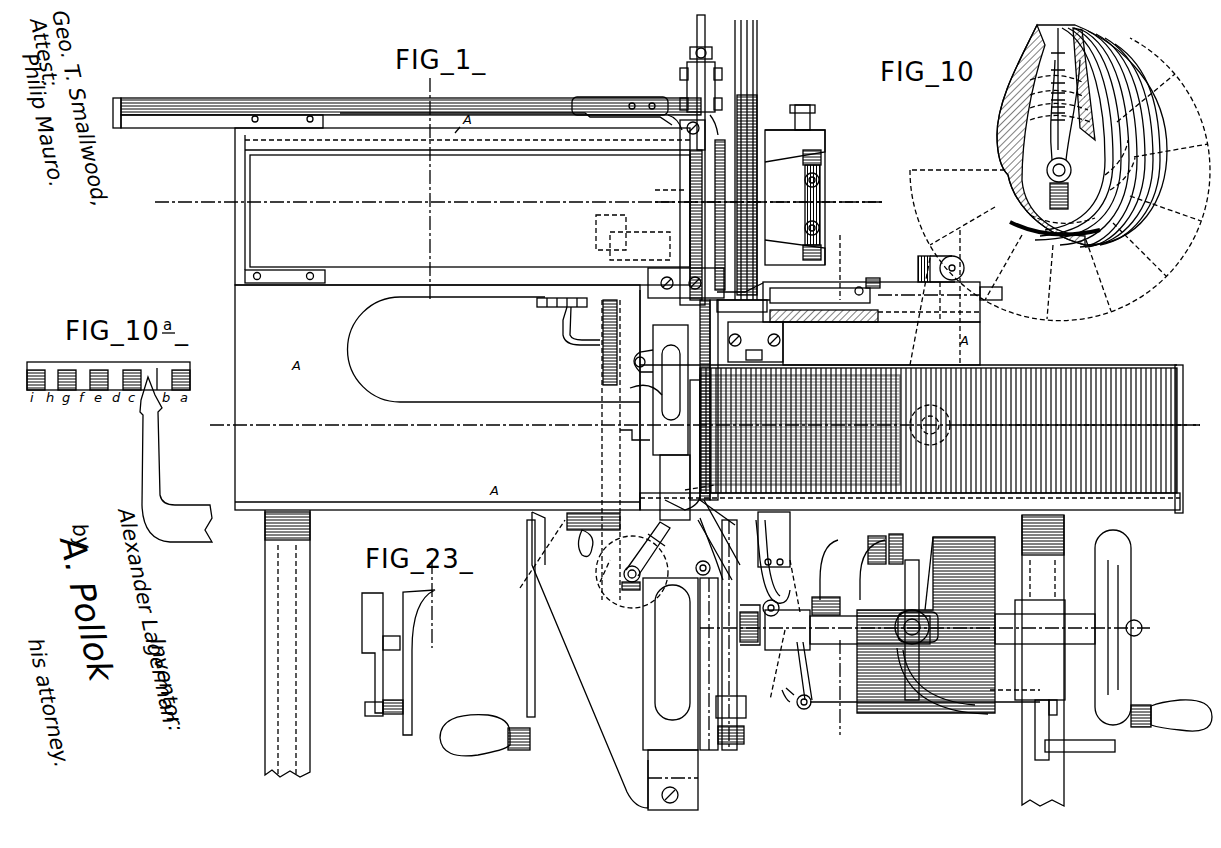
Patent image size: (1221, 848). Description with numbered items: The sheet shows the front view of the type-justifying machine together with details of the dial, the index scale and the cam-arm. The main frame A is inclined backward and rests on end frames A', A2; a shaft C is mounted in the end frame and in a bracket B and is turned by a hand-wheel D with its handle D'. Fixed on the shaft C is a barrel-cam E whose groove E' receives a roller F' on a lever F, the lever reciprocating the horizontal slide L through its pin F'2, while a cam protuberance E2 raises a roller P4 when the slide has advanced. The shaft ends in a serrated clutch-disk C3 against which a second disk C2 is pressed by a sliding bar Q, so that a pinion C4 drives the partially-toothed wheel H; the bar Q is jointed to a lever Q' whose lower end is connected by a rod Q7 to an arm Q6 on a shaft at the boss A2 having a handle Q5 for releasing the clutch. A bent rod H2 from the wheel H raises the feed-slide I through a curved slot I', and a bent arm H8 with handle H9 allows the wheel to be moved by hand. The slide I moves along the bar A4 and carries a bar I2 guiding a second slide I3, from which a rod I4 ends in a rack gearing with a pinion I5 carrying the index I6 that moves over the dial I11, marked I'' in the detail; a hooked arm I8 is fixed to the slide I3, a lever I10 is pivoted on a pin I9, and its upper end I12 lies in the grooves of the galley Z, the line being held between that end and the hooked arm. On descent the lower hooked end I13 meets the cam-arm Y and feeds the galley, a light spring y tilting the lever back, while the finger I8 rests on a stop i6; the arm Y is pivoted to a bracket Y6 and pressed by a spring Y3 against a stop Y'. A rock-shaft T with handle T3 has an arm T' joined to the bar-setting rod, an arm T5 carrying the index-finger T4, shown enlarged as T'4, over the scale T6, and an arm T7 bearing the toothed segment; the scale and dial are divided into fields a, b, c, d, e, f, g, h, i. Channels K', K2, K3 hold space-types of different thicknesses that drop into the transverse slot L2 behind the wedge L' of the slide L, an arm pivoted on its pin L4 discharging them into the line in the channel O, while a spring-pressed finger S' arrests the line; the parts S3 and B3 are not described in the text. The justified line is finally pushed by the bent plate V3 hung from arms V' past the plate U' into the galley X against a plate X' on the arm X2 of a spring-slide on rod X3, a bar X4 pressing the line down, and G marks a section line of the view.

In FIG. 1, the rod X3 is at (407, 104).
In FIG. 1, the galley X is at (462, 206).
In FIG. 1, the bar X4 is at (697, 28).
In FIG. 1, the arm X2 is at (680, 150).
In FIG. 1, the plate X' is at (664, 189).
In FIG. 1, the channel K' is at (726, 160).
In FIG. 1, the channel K2 is at (753, 30).
In FIG. 1, the channel K3 is at (757, 52).
In FIG. 1, the plate U' is at (696, 202).
In FIG. 1, the bent plate V3 is at (768, 102).
In FIG. 1, the arms V' is at (822, 201).
In FIG. 1, the section line G is at (835, 260).
In FIG. 1, the pin L4 is at (862, 282).
In FIG. 1, the slide L is at (940, 302).
In FIG. 1, the wedge L' is at (743, 297).
In FIG. 1, the transverse slot L2 is at (815, 308).
In FIG. 1, the channel O is at (780, 347).
In FIG. 1, the finger S' is at (854, 275).
In FIG. 1, the block S3 is at (878, 272).
In FIG. 1, the pin F'2 is at (952, 259).
In FIG. 1, the main frame A is at (510, 203).
In FIG. 1, the end frame A' is at (287, 643).
In FIG. 1, the end frame A2 is at (1045, 545).
In FIG. 1, the bar A4 is at (686, 539).
In FIG. 1, the bracket B is at (902, 429).
In FIG. 1, the hub B3 is at (823, 601).
In FIG. 1, the shaft C is at (699, 523).
In FIG. 1, the hand-wheel D is at (1080, 567).
In FIG. 1, the handle D' is at (1171, 715).
In FIG. 1, the barrel-cam E is at (712, 394).
In FIG. 1, the groove E' is at (942, 681).
In FIG. 1, the cam protuberance E2 is at (922, 570).
In FIG. 1, the slide I is at (670, 664).
In FIG. 1, the curved slot I' is at (709, 664).
In FIG. 1, the dial I'' is at (633, 565).
In FIG. 10, the dial I'' is at (1065, 134).
In FIG. 1, the bar I2 is at (675, 485).
In FIG. 1, the slide I3 is at (661, 390).
In FIG. 1, the rod I4 is at (633, 422).
In FIG. 1, the pinion I5 is at (672, 312).
In FIG. 1, the index I6 is at (656, 544).
In FIG. 10, the index I6 is at (1057, 32).
In FIG. 1, the hooked arm I8 is at (671, 382).
In FIG. 1, the pin I9 is at (712, 571).
In FIG. 1, the lever I10 is at (720, 545).
In FIG. 1, the dial I11 is at (704, 540).
In FIG. 1, the upper end I12 is at (691, 487).
In FIG. 1, the lower hooked end I13 is at (736, 697).
In FIG. 1, the stop i6 is at (645, 387).
In FIG. 1, the clutch-disk C2 is at (782, 691).
In FIG. 1, the clutch-disk C3 is at (768, 600).
In FIG. 1, the pinion C4 is at (672, 652).
In FIG. 1, the partially-toothed wheel H is at (777, 635).
In FIG. 1, the bent rod H2 is at (752, 692).
In FIG. 1, the bent arm H8 is at (519, 618).
In FIG. 1, the handle H9 is at (485, 735).
In FIG. 1, the sliding bar Q is at (784, 630).
In FIG. 1, the lever Q' is at (811, 675).
In FIG. 1, the handle Q5 is at (1093, 752).
In FIG. 1, the arm Q6 is at (1057, 715).
In FIG. 1, the rod Q7 is at (925, 700).
In FIG. 1, the roller P4 is at (890, 532).
In FIG. 1, the roller F' is at (870, 570).
In FIG. 1, the arm T' is at (916, 639).
In FIG. 1, the rock-shaft T is at (598, 347).
In FIG. 1, the handle T3 is at (584, 534).
In FIG. 1, the index-finger T4 is at (581, 326).
In FIG. 1, the arm T5 is at (595, 352).
In FIG. 1, the scale T6 is at (561, 310).
In FIG. 10A, the scale T6 is at (108, 368).
In FIG. 1, the arm T7 is at (630, 612).
In FIG. 10A, the index-finger T'4 is at (176, 459).
In FIG. 1, the cam-arm Y is at (773, 557).
In FIG. 23, the cam-arm Y is at (361, 653).
In FIG. 23, the stop Y' is at (393, 655).
In FIG. 23, the spring Y3 is at (384, 717).
In FIG. 23, the bracket Y6 is at (414, 686).
In FIG. 23, the lever F is at (441, 604).
In FIG. 1, the galley Z is at (911, 439).
In FIG. 1, the light spring y is at (682, 501).
In FIG. 10, the field a is at (1010, 98).
In FIG. 10, the field b is at (1041, 95).
In FIG. 10, the field c is at (1093, 87).
In FIG. 10, the field d is at (1100, 108).
In FIG. 10, the field e is at (1120, 126).
In FIG. 10, the field f is at (1134, 144).
In FIG. 10, the field g is at (1152, 145).
In FIG. 10, the field h is at (1156, 161).
In FIG. 10, the field i is at (1168, 180).